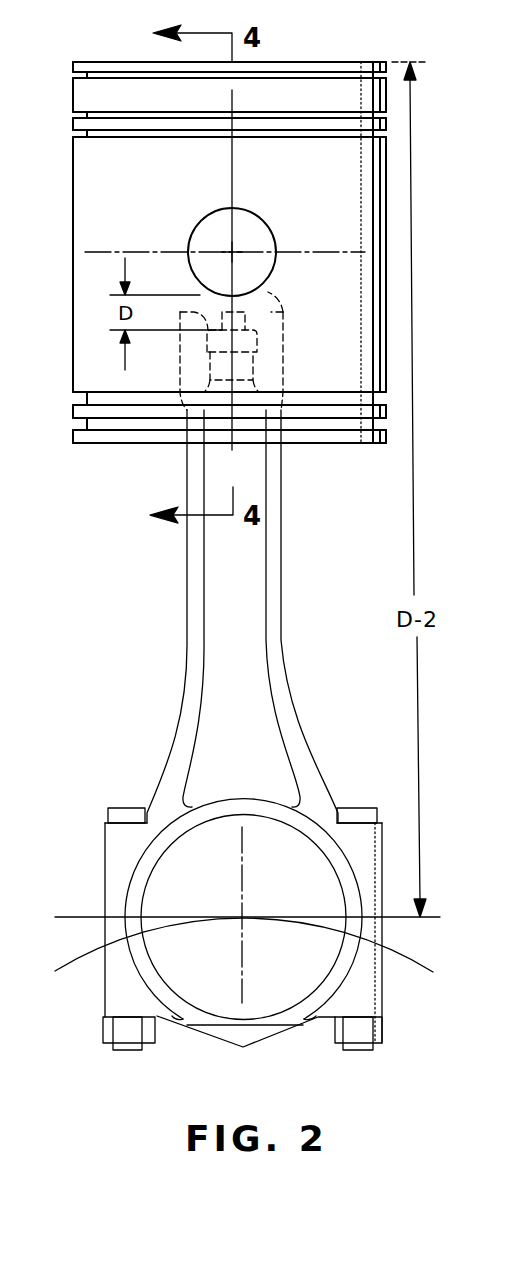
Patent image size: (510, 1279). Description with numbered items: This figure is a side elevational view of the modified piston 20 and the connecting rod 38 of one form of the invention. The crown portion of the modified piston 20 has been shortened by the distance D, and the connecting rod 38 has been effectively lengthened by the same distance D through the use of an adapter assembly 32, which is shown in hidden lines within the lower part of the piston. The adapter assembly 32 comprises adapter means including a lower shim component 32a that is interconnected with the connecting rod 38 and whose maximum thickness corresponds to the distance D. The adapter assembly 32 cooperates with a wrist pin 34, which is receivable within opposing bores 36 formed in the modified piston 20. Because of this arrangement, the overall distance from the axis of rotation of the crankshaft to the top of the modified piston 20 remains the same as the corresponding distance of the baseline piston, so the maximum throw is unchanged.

The modified piston 20 is at (306, 62).
The adapter assembly 32 is at (280, 300).
The lower shim component 32a is at (277, 289).
The wrist pin 34 is at (206, 228).
The bores 36 is at (258, 226).
The connecting rod 38 is at (197, 650).